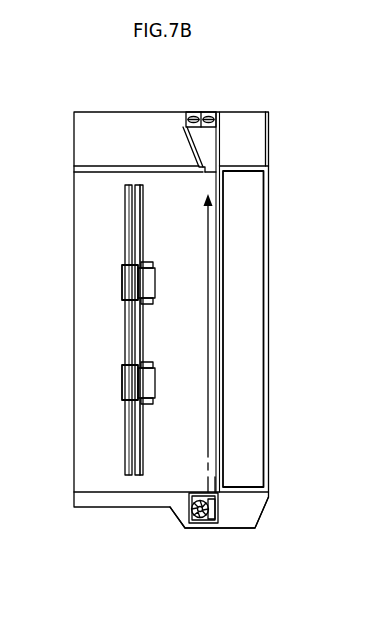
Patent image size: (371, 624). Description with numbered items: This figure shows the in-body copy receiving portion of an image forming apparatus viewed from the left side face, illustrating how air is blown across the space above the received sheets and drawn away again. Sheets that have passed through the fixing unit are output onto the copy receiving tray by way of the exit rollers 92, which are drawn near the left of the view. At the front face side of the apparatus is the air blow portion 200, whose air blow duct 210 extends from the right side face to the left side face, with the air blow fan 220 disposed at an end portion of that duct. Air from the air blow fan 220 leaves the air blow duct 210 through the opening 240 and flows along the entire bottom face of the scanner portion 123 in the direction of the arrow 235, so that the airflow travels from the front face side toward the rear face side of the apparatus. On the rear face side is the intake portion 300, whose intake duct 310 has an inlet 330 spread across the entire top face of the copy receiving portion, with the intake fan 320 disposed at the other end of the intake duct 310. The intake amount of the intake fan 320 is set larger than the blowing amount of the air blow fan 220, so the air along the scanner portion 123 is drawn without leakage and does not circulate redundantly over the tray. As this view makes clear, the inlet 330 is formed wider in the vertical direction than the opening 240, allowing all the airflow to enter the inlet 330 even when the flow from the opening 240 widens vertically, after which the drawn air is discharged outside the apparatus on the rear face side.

The exit rollers 92 is at (110, 332).
The scanner portion 123 is at (246, 402).
The air blow portion 200 is at (233, 504).
The air blow duct 210 is at (218, 492).
The air blow fan 220 is at (193, 523).
The arrow 235 is at (209, 333).
The opening 240 is at (215, 472).
The intake portion 300 is at (229, 119).
The intake duct 310 is at (221, 140).
The intake fan 320 is at (192, 111).
The inlet 330 is at (213, 176).